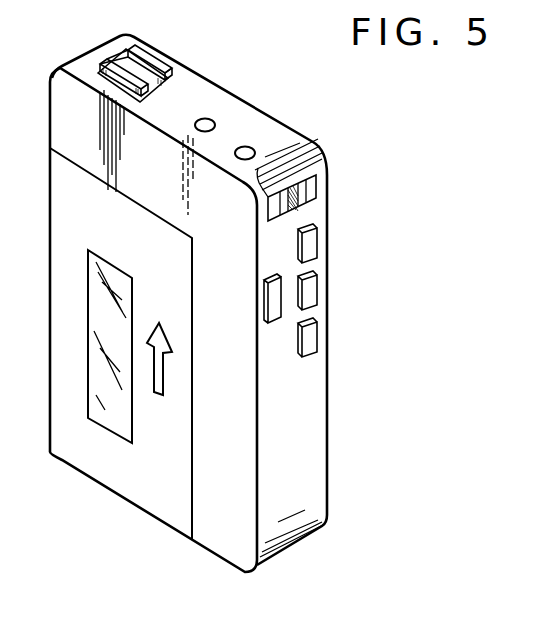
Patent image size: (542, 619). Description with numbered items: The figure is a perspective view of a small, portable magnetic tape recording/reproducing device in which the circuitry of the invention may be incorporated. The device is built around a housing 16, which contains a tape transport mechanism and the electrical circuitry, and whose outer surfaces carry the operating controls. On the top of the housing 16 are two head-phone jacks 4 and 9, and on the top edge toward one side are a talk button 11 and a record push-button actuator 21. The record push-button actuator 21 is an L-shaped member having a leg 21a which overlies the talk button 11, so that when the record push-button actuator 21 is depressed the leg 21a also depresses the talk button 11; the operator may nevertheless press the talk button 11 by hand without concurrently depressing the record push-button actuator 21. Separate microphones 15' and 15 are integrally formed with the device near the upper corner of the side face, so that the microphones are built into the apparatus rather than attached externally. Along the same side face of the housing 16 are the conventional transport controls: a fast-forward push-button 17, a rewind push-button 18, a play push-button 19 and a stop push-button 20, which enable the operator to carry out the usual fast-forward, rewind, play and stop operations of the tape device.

The head-phone jack 4 is at (215, 122).
The head-phone jack 9 is at (257, 150).
The talk button 11 is at (168, 66).
The microphone 15 is at (330, 196).
The microphone 15' is at (328, 158).
The housing 16 is at (315, 457).
The fast-forward push-button 17 is at (318, 246).
The rewind push-button 18 is at (318, 291).
The play push-button 19 is at (318, 338).
The stop push-button 20 is at (277, 318).
The record push-button actuator 21 is at (102, 52).
The leg 21a is at (147, 57).